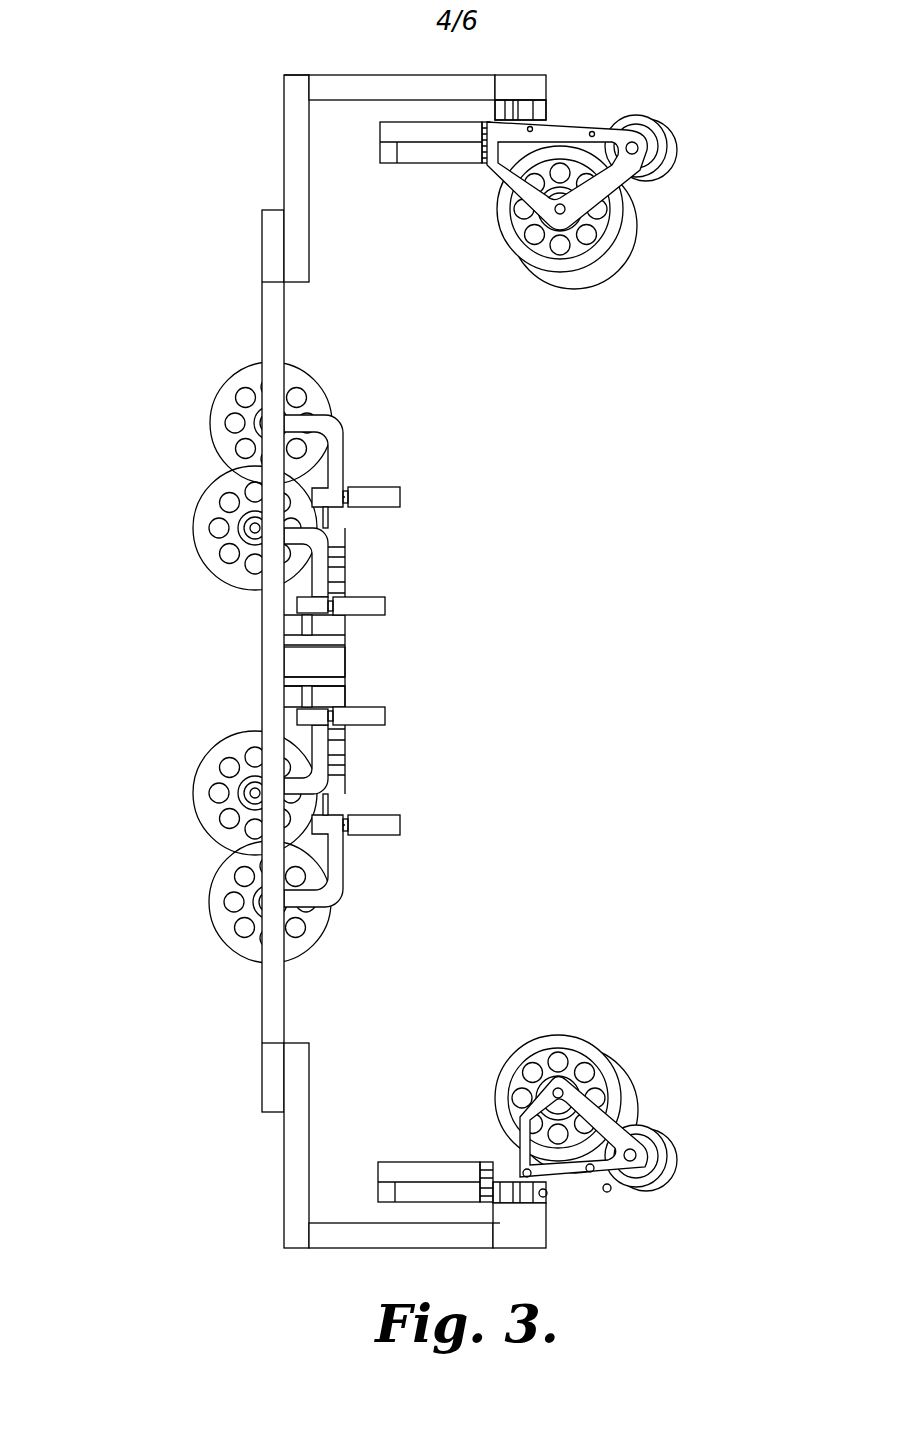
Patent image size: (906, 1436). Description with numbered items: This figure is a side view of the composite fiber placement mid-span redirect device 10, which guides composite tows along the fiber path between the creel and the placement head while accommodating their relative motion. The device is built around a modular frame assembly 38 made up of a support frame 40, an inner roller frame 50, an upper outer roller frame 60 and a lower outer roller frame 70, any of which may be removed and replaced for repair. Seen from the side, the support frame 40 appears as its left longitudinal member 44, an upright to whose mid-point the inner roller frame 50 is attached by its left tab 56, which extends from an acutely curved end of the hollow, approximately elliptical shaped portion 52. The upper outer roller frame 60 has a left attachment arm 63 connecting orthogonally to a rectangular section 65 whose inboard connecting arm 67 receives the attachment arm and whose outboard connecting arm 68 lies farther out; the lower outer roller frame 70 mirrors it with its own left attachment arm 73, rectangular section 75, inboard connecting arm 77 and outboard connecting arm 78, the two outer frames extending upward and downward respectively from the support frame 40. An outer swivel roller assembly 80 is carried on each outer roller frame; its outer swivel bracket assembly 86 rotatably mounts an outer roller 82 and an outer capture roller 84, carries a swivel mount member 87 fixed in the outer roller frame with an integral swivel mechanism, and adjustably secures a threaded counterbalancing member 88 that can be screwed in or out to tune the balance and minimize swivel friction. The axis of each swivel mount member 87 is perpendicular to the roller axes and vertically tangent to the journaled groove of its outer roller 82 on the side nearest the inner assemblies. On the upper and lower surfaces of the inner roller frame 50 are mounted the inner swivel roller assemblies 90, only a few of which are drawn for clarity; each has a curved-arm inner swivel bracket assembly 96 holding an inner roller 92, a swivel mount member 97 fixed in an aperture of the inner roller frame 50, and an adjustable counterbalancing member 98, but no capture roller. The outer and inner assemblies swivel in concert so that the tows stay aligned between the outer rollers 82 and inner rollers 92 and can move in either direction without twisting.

The composite fiber placement mid-span redirect device 10 is at (199, 81).
The frame assembly 38 is at (149, 224).
The support frame 40 is at (256, 1077).
The left longitudinal member 44 is at (270, 300).
The inner roller frame 50 is at (378, 633).
The elliptical shaped portion 52 is at (340, 697).
The left tab 56 is at (330, 662).
The upper outer roller frame 60 is at (392, 141).
The left attachment arm 63 is at (297, 171).
The rectangular section 65 is at (357, 88).
The inboard connecting arm 67 is at (298, 85).
The outboard connecting arm 68 is at (522, 85).
The lower outer roller frame 70 is at (377, 1179).
The left attachment arm 73 is at (290, 1176).
The rectangular section 75 is at (425, 1241).
The inboard connecting arm 77 is at (290, 1241).
The outboard connecting arm 78 is at (522, 1243).
The outer swivel roller assembly 80 is at (650, 664).
The outer roller 82 is at (608, 233).
The outer capture roller 84 is at (680, 151).
The outer swivel bracket assembly 86 is at (580, 130).
The swivel mount member 87 is at (545, 110).
The counterbalancing member 88 is at (440, 128).
The inner swivel roller assembly 90 is at (398, 466).
The inner roller 92 is at (215, 440).
The inner swivel bracket assembly 96 is at (343, 440).
The swivel mount member 97 is at (305, 630).
The counterbalancing member 98 is at (400, 497).